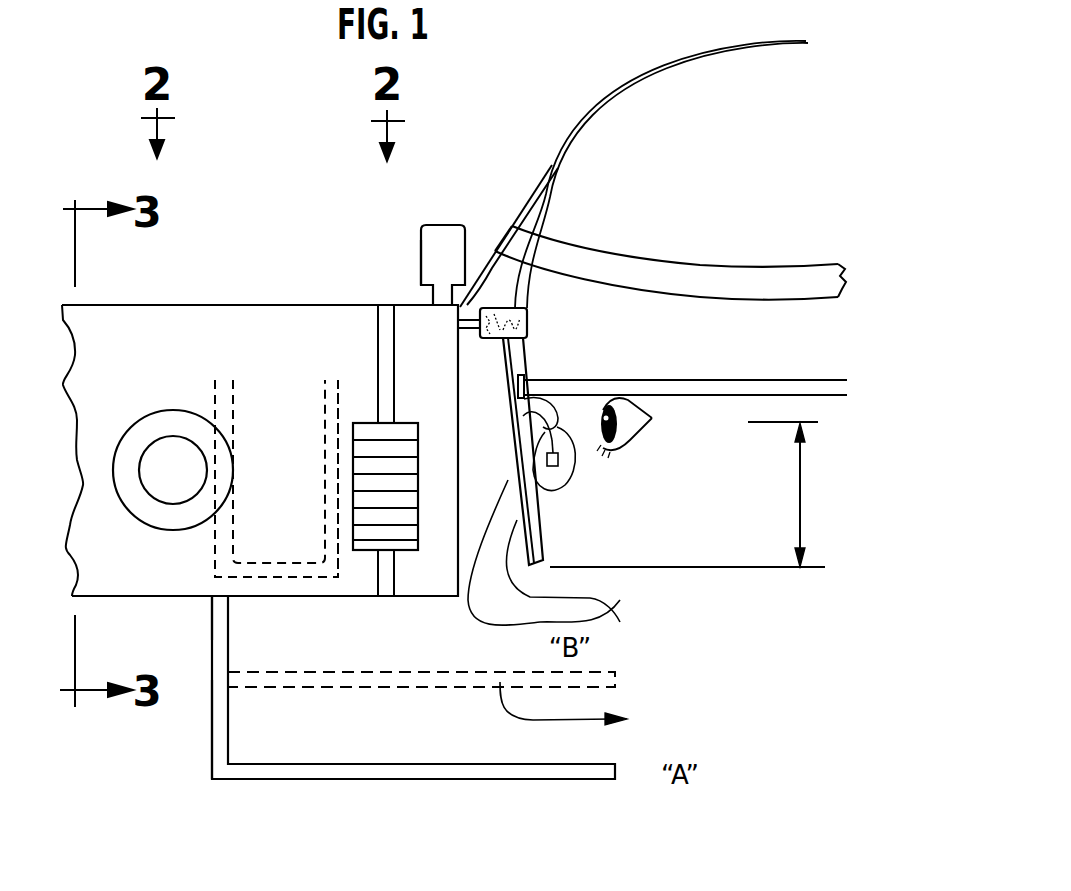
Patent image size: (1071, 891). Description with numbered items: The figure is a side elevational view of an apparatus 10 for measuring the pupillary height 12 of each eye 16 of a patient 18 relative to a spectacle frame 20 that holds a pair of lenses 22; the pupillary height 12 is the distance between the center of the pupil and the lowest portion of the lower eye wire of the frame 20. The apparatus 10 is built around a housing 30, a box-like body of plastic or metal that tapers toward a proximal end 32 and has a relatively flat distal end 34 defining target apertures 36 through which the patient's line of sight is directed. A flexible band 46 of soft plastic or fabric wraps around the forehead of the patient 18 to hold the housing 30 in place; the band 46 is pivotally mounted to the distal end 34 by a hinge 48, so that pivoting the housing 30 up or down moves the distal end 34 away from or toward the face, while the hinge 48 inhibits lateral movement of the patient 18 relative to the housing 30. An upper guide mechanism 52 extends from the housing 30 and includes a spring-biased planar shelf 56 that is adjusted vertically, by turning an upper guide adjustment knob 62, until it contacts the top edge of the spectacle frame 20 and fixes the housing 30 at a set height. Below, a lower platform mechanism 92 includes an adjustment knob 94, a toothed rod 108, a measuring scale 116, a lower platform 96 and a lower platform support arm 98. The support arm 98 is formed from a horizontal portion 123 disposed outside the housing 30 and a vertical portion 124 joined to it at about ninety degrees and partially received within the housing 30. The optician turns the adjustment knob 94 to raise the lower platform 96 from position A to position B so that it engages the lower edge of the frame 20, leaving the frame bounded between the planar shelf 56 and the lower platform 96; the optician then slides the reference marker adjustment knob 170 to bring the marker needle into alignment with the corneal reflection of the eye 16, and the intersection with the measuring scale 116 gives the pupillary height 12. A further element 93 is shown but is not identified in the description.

The apparatus 10 is at (212, 268).
The pupillary height 12 is at (803, 515).
The eye 16 is at (620, 423).
The patient 18 is at (685, 80).
The spectacle frame 20 is at (528, 513).
The lenses 22 is at (613, 589).
The housing 30 is at (145, 305).
The proximal end 32 is at (88, 505).
The distal end 34 is at (364, 297).
The target apertures 36 is at (472, 492).
The flexible band 46 is at (573, 138).
The hinge 48 is at (466, 303).
The upper guide mechanism 52 is at (443, 205).
The planar shelf 56 is at (551, 184).
The upper guide adjustment knob 62 is at (420, 258).
The lower platform mechanism 92 is at (203, 614).
The housing bottom 93 is at (140, 582).
The lower platform adjustment knob 94 is at (182, 423).
The lower platform 96 is at (500, 780).
The lower platform support arm 98 is at (212, 757).
The toothed rod 108 is at (235, 402).
The measuring scale 116 is at (328, 390).
The horizontal portion 123 is at (347, 780).
The vertical portion 124 is at (212, 718).
The reference marker adjustment knob 170 is at (410, 425).